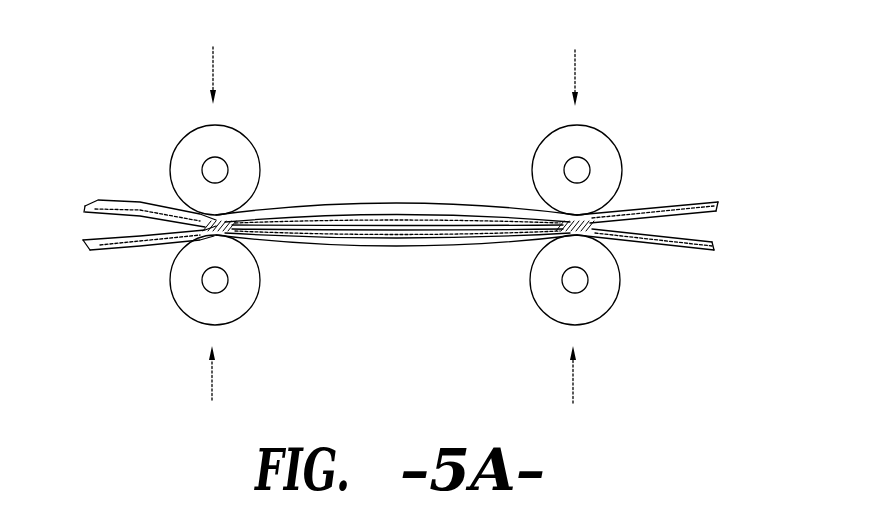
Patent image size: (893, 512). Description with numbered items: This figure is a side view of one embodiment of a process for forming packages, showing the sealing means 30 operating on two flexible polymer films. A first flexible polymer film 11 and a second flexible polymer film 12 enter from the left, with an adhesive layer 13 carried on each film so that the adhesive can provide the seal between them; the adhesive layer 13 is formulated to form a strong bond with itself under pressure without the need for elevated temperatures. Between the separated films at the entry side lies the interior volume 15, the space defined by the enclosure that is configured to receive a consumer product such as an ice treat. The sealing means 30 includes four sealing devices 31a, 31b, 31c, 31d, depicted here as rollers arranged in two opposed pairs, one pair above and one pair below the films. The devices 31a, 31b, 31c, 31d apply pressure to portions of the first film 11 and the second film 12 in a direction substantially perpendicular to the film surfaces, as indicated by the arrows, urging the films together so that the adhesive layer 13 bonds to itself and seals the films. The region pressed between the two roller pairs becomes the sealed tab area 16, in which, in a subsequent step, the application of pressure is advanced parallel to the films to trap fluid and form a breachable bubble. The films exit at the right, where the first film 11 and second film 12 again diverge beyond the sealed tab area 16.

The sealing means 30 is at (313, 217).
The sealing device 31a is at (258, 147).
The sealing device 31b is at (620, 155).
The sealing device 31c is at (257, 295).
The sealing device 31d is at (617, 298).
The first flexible polymer film 11 is at (720, 205).
The second flexible polymer film 12 is at (718, 250).
The adhesive layer 13 is at (718, 213).
The interior volume 15 is at (100, 226).
The tab area 16 is at (383, 203).